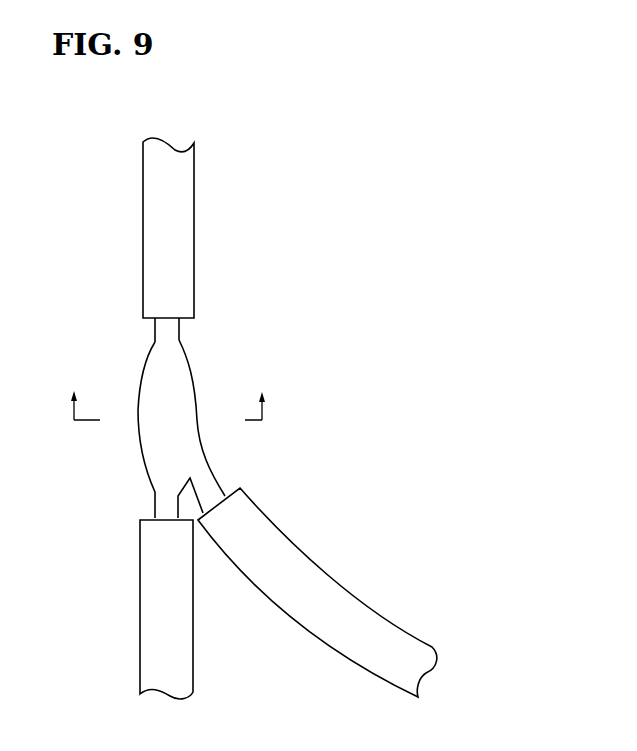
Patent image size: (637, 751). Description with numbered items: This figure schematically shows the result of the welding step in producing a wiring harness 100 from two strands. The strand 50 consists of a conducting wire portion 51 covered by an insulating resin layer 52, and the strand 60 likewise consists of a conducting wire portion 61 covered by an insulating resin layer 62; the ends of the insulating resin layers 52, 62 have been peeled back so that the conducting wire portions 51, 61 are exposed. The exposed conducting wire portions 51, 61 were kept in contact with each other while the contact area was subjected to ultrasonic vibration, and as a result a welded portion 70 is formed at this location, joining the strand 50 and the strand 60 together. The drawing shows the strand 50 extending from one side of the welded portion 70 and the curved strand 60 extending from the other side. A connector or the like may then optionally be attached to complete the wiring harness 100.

The wiring harness 100 is at (425, 208).
The strand 50 is at (200, 183).
The conducting wire portion 51 is at (168, 333).
The insulating resin layer 52 is at (180, 249).
The strand 60 is at (363, 587).
The conducting wire portion 61 is at (207, 490).
The insulating resin layer 62 is at (280, 562).
The welded portion 70 is at (182, 385).